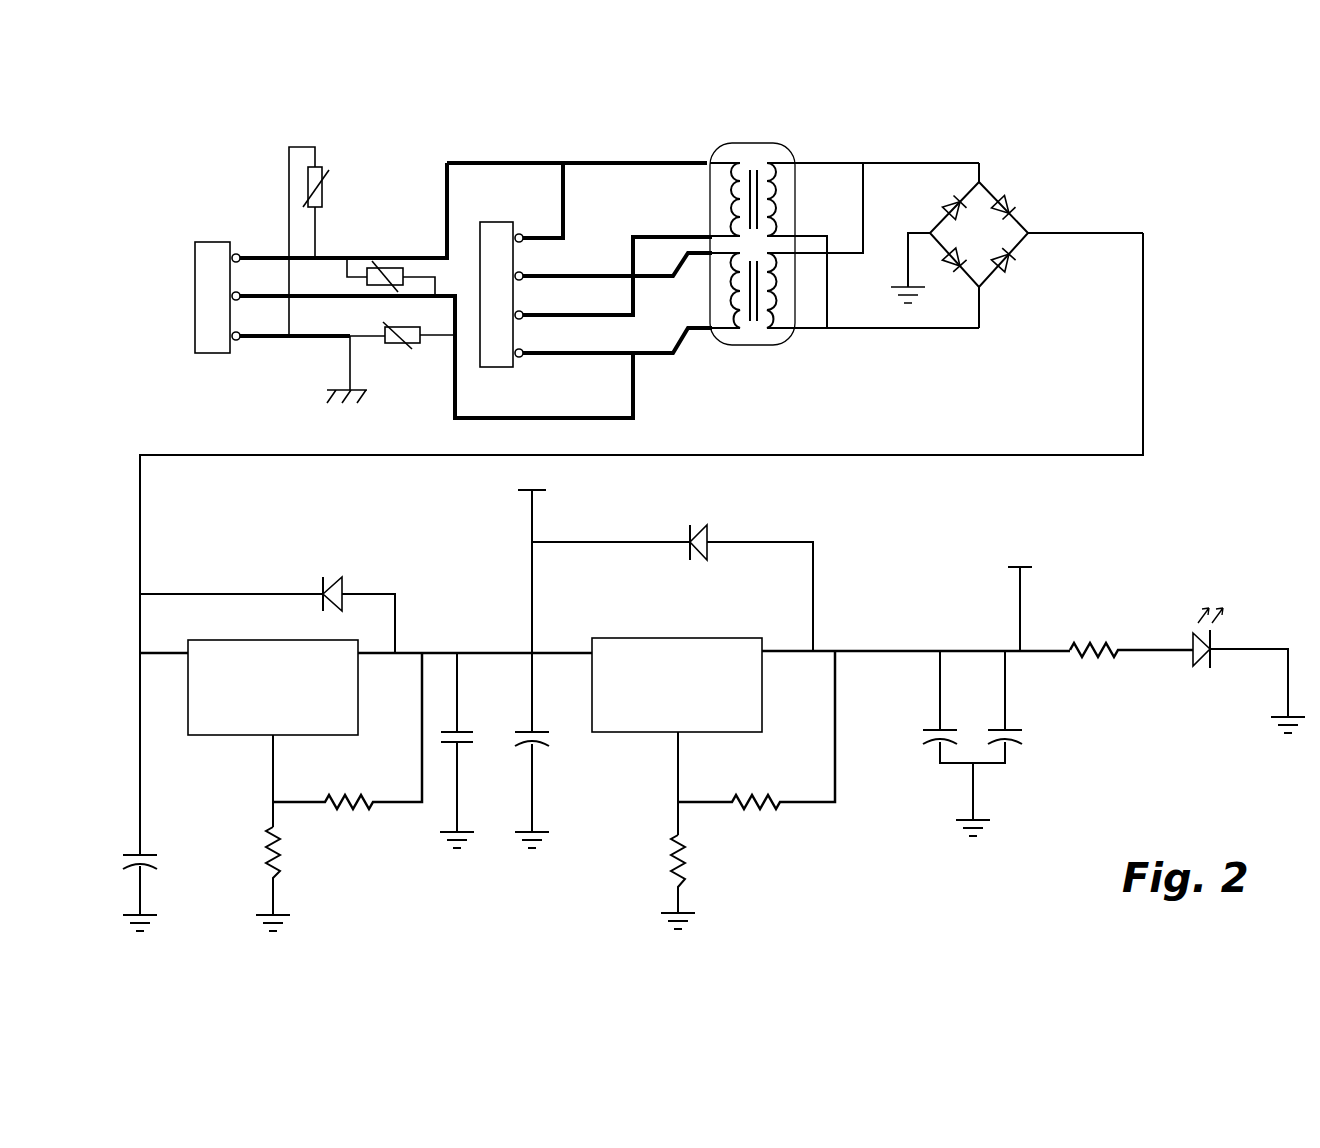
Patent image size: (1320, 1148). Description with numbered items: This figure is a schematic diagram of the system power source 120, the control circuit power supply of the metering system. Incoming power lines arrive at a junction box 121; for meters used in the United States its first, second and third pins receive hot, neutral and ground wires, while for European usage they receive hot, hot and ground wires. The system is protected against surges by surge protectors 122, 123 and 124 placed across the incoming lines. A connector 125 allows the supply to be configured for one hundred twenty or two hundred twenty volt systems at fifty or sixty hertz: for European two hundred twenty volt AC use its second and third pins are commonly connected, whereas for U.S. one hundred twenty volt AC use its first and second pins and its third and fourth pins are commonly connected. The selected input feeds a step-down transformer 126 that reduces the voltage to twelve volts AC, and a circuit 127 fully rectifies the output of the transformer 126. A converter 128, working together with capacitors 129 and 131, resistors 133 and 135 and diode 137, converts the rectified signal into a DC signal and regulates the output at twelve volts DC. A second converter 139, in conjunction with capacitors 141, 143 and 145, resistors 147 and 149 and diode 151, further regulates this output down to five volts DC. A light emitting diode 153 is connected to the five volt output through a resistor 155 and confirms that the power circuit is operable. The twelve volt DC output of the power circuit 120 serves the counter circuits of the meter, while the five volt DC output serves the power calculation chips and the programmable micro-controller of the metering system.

The system power source 120 is at (623, 148).
The junction box 121 is at (205, 240).
The surge protector 122 is at (388, 266).
The surge protector 123 is at (391, 345).
The surge protector 124 is at (323, 189).
The connector 125 is at (494, 220).
The step-down transformer 126 is at (781, 143).
The rectifier circuit 127 is at (993, 186).
The converter 128 is at (231, 737).
The capacitor 129 is at (160, 856).
The capacitor 131 is at (463, 728).
The resistor 133 is at (283, 856).
The resistor 135 is at (365, 795).
The diode 137 is at (332, 576).
The second converter 139 is at (686, 636).
The capacitor 141 is at (543, 746).
The capacitor 143 is at (930, 730).
The capacitor 145 is at (1022, 726).
The resistor 147 is at (683, 875).
The resistor 149 is at (768, 812).
The diode 151 is at (700, 525).
The light emitting diode 153 is at (1199, 667).
The resistor 155 is at (1090, 640).